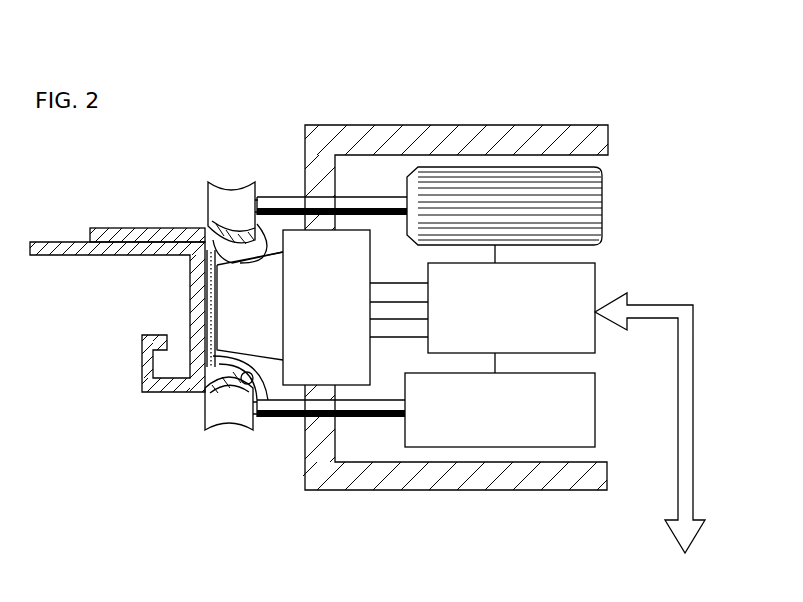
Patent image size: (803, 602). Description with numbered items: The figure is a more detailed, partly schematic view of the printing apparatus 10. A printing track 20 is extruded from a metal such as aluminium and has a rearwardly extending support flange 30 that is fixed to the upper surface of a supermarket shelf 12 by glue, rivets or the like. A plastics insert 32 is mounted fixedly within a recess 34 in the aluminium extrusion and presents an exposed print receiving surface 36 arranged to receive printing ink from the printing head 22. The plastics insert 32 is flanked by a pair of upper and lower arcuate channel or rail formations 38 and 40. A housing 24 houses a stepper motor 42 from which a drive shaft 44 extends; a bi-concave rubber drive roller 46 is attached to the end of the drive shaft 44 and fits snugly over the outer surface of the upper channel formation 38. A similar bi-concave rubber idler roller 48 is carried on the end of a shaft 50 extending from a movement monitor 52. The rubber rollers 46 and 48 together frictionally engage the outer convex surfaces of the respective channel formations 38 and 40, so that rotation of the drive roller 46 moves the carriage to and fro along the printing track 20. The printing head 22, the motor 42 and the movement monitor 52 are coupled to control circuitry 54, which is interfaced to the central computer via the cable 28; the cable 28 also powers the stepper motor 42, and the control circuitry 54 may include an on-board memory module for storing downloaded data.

The printing apparatus 10 is at (262, 106).
The supermarket shelf 12 is at (111, 257).
The printing track 20 is at (183, 210).
The printing head 22 is at (341, 321).
The housing 24 is at (466, 125).
The cable 28 is at (694, 410).
The support flange 30 is at (117, 230).
The plastics insert 32 is at (270, 408).
The recess 34 is at (205, 318).
The print receiving surface 36 is at (268, 218).
The upper channel formation 38 is at (232, 212).
The lower channel formation 40 is at (233, 425).
The stepper motor 42 is at (612, 216).
The drive shaft 44 is at (371, 200).
The drive roller 46 is at (207, 186).
The idler roller 48 is at (210, 428).
The shaft 50 is at (366, 420).
The movement monitor 52 is at (597, 430).
The control circuitry 54 is at (597, 282).